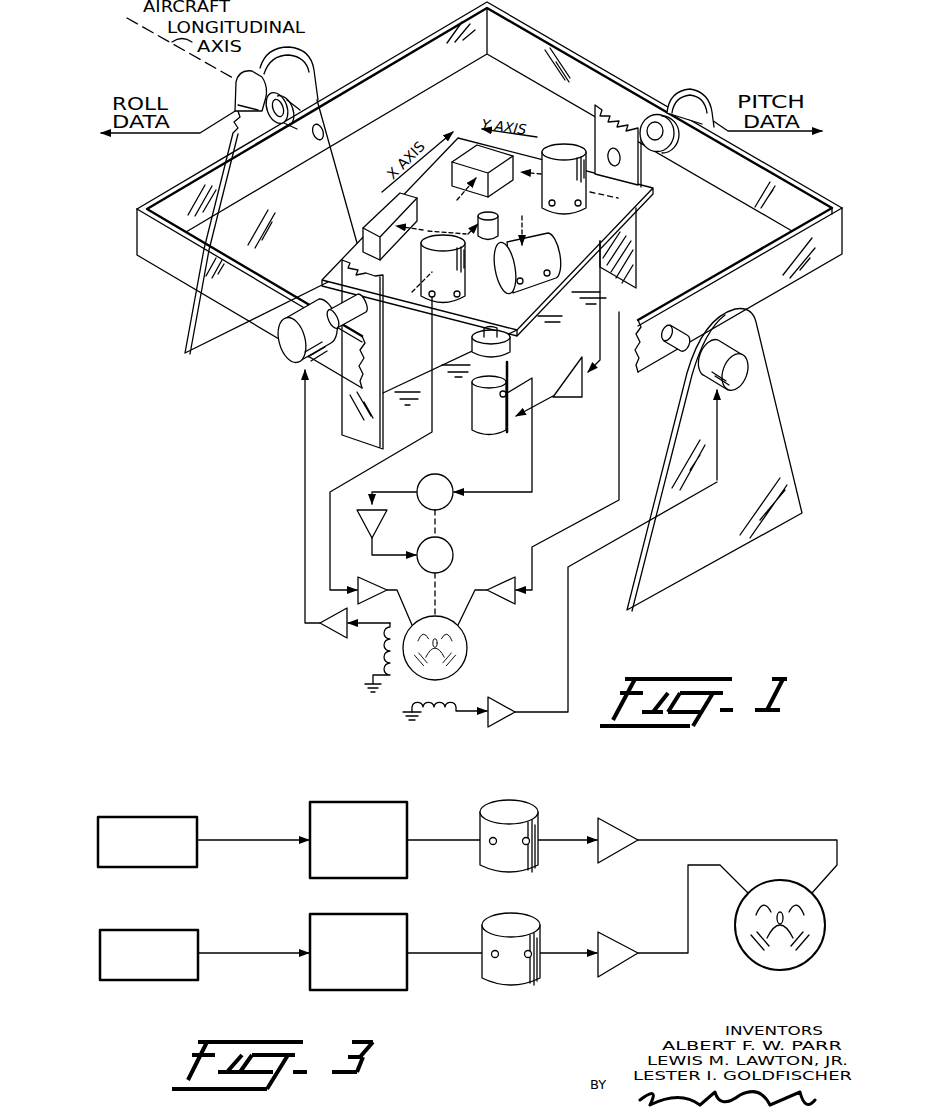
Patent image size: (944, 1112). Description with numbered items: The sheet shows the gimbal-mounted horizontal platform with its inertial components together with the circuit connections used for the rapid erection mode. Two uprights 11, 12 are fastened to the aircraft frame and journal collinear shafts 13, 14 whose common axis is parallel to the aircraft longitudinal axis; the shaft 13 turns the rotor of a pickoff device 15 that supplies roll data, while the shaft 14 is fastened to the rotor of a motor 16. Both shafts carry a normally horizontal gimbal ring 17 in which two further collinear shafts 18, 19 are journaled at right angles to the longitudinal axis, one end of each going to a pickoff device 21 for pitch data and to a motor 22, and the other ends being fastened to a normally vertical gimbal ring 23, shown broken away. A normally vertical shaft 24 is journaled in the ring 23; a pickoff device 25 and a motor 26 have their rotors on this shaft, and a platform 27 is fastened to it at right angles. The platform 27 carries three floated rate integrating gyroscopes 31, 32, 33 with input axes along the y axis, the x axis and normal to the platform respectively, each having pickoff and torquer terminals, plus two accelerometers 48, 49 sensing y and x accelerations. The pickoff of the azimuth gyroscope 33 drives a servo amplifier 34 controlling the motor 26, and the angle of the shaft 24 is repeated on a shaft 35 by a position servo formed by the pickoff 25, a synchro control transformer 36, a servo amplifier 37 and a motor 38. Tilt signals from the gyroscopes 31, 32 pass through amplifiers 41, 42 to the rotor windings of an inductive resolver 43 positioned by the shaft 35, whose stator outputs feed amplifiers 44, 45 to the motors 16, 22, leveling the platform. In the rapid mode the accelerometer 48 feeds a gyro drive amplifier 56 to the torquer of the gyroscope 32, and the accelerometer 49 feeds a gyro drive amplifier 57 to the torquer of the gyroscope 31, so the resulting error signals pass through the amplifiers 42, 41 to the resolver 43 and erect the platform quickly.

In FIG. 1, the upright 11 is at (306, 60).
In FIG. 1, the upright 12 is at (743, 318).
In FIG. 1, the shaft 13 is at (303, 100).
In FIG. 1, the shaft 14 is at (668, 349).
In FIG. 1, the pickoff device 15 is at (234, 92).
In FIG. 1, the motor 16 is at (748, 366).
In FIG. 1, the gimbal ring 17 is at (561, 46).
In FIG. 1, the shaft 18 is at (647, 152).
In FIG. 1, the shaft 19 is at (337, 308).
In FIG. 1, the pickoff device 21 is at (702, 92).
In FIG. 1, the motor 22 is at (283, 352).
In FIG. 1, the gimbal ring 23 is at (357, 433).
In FIG. 1, the shaft 24 is at (481, 331).
In FIG. 1, the pickoff device 25 is at (509, 372).
In FIG. 1, the motor 26 is at (497, 432).
In FIG. 1, the platform 27 is at (652, 196).
In FIG. 1, the gyroscope 31 is at (572, 214).
In FIG. 3, the gyroscope 31 is at (538, 922).
In FIG. 1, the gyroscope 32 is at (466, 298).
In FIG. 3, the gyroscope 32 is at (536, 809).
In FIG. 1, the azimuth gyroscope 33 is at (513, 291).
In FIG. 1, the servo amplifier 34 is at (576, 398).
In FIG. 1, the shaft 35 is at (443, 525).
In FIG. 1, the synchro control transformer 36 is at (453, 481).
In FIG. 1, the servo amplifier 37 is at (387, 521).
In FIG. 1, the motor 38 is at (453, 553).
In FIG. 1, the amplifier 41 is at (515, 601).
In FIG. 3, the amplifier 41 is at (615, 938).
In FIG. 1, the amplifier 42 is at (358, 584).
In FIG. 3, the amplifier 42 is at (620, 820).
In FIG. 1, the inductive resolver 43 is at (468, 652).
In FIG. 3, the inductive resolver 43 is at (747, 960).
In FIG. 1, the amplifier 44 is at (517, 697).
In FIG. 1, the amplifier 45 is at (345, 638).
In FIG. 1, the accelerometer 48 is at (385, 253).
In FIG. 3, the accelerometer 48 is at (190, 817).
In FIG. 1, the accelerometer 49 is at (505, 188).
In FIG. 3, the accelerometer 49 is at (192, 930).
In FIG. 3, the gyro drive amplifier 56 is at (407, 808).
In FIG. 3, the gyro drive amplifier 57 is at (407, 921).